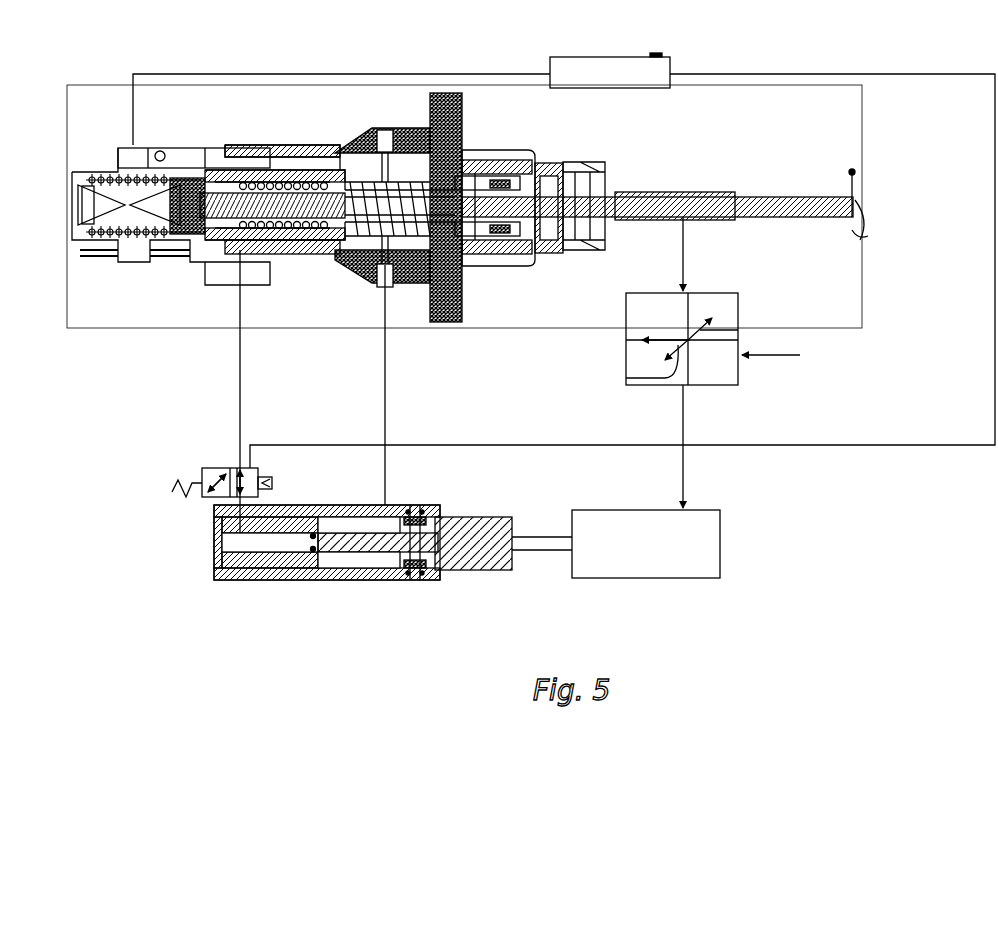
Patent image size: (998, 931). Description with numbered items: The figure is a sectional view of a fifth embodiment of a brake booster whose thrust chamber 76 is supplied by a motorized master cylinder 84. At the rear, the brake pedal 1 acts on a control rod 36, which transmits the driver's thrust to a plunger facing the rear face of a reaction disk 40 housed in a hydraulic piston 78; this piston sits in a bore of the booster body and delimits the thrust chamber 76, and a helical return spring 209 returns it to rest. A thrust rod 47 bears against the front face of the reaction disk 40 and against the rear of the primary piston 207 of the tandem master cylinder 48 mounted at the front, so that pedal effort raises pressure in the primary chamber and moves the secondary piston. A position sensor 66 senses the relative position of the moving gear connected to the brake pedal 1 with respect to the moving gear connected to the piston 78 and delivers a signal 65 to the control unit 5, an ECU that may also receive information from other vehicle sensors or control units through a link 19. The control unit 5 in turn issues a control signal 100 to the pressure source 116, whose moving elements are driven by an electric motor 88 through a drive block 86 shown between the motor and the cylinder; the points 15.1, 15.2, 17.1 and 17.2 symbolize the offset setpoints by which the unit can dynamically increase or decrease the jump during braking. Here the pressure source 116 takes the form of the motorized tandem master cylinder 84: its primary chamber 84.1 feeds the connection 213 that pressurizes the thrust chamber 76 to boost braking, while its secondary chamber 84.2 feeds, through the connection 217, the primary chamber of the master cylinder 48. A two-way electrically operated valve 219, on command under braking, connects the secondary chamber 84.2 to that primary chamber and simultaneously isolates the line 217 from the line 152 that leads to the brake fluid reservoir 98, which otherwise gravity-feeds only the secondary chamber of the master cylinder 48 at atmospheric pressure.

The brake pedal 1 is at (860, 236).
The control unit 5 is at (685, 353).
The point 15.1 is at (626, 378).
The point 15.2 is at (665, 360).
The point 17.1 is at (738, 330).
The point 17.2 is at (712, 318).
The link 19 is at (770, 355).
The control rod 36 is at (790, 217).
The reaction disk 40 is at (468, 165).
The thrust rod 47 is at (325, 198).
The master cylinder 48 is at (150, 245).
The signal 65 is at (688, 247).
The sensor 66 is at (690, 192).
The thrust chamber 76 is at (385, 287).
The hydraulic piston 78 is at (505, 255).
The motorized master cylinder 84 is at (418, 580).
The primary chamber 84.1 is at (352, 568).
The secondary chamber 84.2 is at (255, 552).
The cylinder block 86 is at (480, 570).
The motor 88 is at (648, 578).
The reservoir 98 is at (562, 57).
The control signal 100 is at (686, 465).
The pressure source 116 is at (394, 584).
The line 152 is at (895, 447).
The primary piston 207 is at (345, 255).
The return spring 209 is at (425, 255).
The connection 213 is at (383, 365).
The connection 217 is at (238, 380).
The two-way electrically operated valve 219 is at (202, 492).